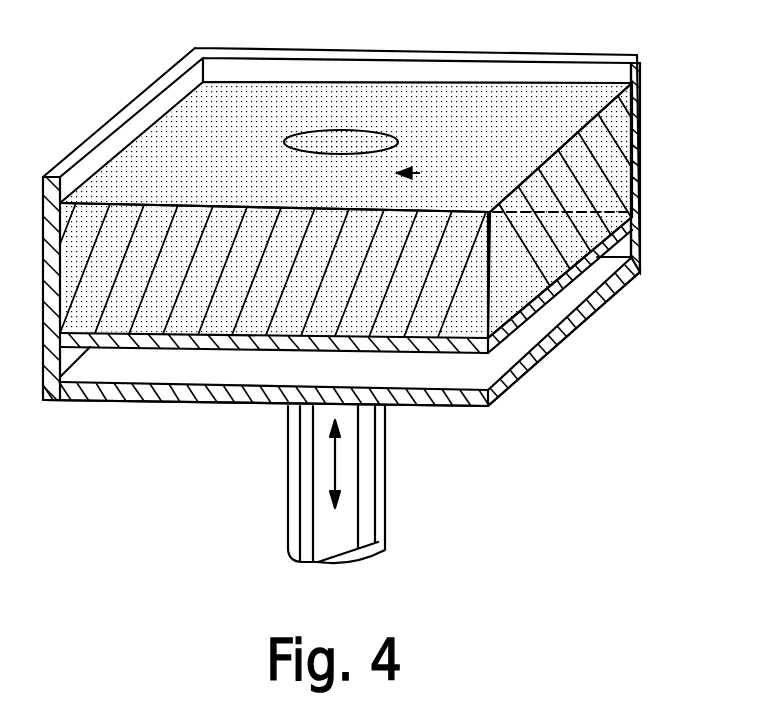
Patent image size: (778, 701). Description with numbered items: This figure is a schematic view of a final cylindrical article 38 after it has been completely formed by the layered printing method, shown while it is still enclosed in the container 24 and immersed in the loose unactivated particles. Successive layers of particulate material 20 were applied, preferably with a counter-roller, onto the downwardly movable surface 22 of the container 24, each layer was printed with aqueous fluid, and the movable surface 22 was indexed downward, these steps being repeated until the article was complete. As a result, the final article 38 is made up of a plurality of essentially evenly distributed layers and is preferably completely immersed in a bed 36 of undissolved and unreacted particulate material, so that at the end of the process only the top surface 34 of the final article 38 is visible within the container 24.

The particulate material 20 is at (462, 112).
The downwardly movable surface 22 is at (573, 277).
The container 24 is at (642, 199).
The top surface 34 is at (330, 132).
The bed 36 is at (623, 142).
The final article 38 is at (420, 173).